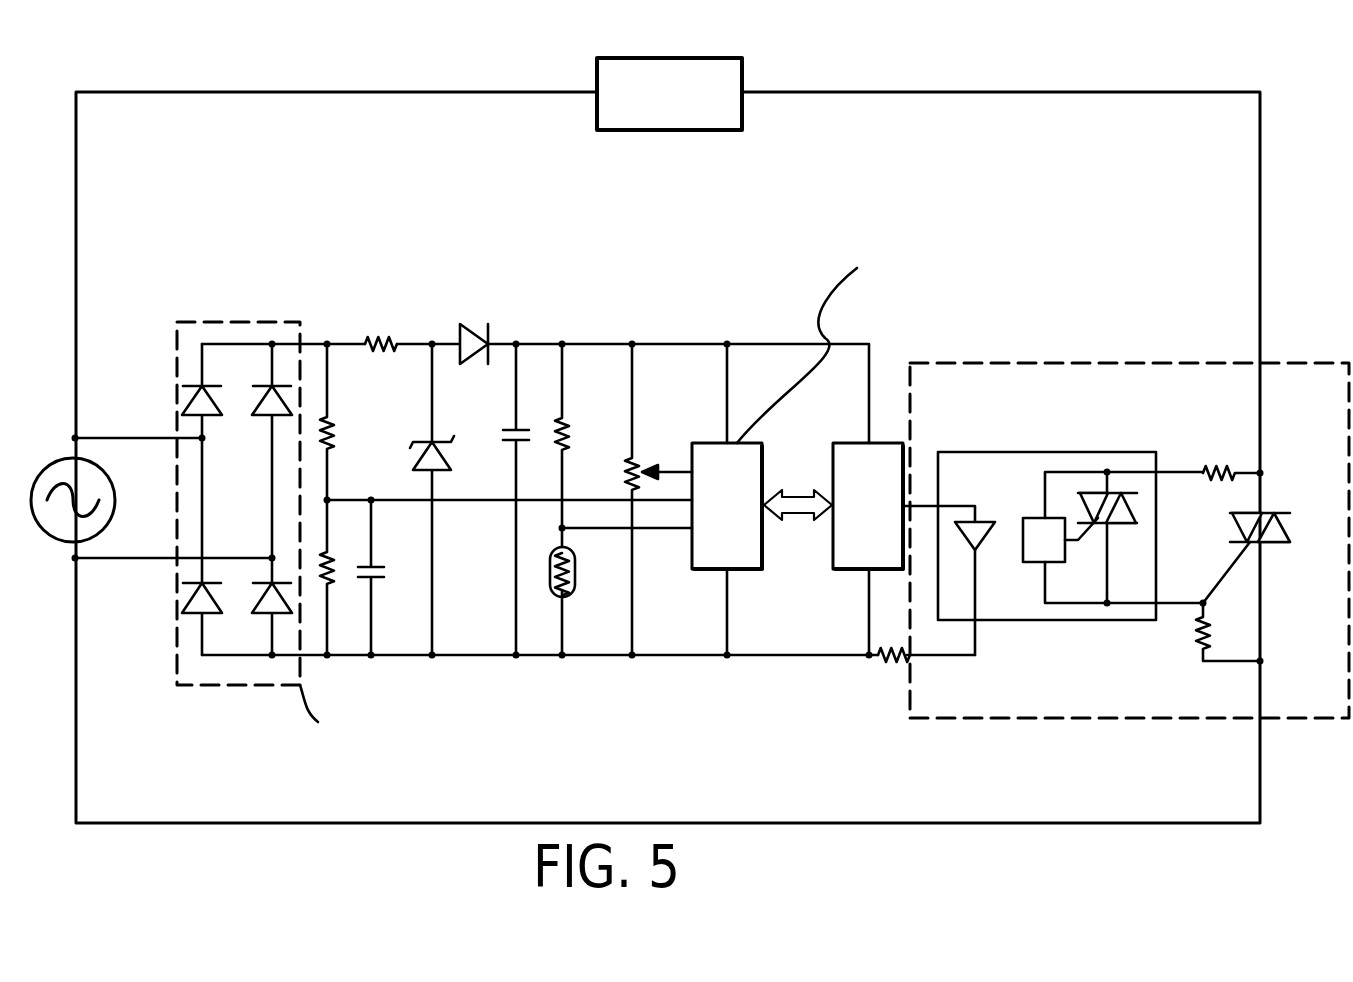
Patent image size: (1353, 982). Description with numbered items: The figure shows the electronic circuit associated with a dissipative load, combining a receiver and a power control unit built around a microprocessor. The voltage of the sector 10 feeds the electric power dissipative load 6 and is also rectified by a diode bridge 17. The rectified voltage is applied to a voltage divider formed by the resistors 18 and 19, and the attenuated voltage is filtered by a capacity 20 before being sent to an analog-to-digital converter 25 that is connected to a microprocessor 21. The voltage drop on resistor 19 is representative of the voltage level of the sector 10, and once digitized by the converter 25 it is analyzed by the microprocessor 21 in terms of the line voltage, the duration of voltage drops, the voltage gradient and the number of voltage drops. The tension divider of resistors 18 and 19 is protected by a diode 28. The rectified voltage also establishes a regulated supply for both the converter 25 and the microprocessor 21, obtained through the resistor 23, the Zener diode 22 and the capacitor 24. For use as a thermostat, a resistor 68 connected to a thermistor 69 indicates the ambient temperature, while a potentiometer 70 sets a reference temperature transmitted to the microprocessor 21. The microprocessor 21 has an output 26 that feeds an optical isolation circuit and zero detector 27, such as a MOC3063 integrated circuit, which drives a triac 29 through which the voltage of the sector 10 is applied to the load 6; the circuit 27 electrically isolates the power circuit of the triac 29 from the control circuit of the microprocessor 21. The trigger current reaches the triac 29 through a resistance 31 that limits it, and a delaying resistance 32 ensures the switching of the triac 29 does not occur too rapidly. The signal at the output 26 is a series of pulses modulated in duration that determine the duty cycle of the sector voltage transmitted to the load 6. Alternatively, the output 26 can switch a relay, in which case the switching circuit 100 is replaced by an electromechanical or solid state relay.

The sector 10 is at (333, 92).
The electric power dissipative load 6 is at (742, 108).
The diode bridge 17 is at (228, 320).
The resistor 23 is at (383, 342).
The diode 28 is at (483, 325).
The resistor 18 is at (331, 424).
The resistor 19 is at (330, 560).
The capacity 20 is at (378, 567).
The Zener diode 22 is at (420, 444).
The capacitor 24 is at (512, 429).
The resistor 68 is at (566, 420).
The thermistor 69 is at (568, 592).
The potentiometer 70 is at (622, 466).
The analog-to-digital converter 25 is at (742, 521).
The microprocessor 21 is at (858, 443).
The output 26 is at (922, 505).
The optical isolation circuit and zero detector 27 is at (1053, 441).
The resistance 31 is at (1218, 470).
The triac 29 is at (1300, 478).
The delaying resistance 32 is at (1198, 636).
The switching circuit 100 is at (1172, 362).